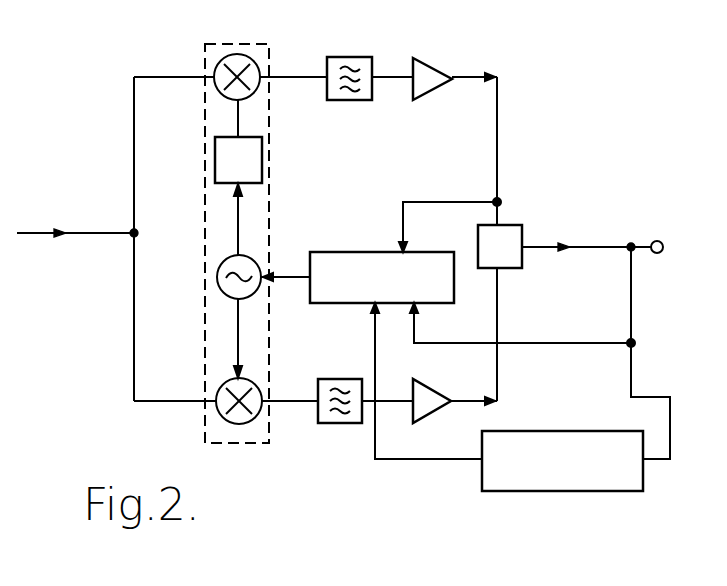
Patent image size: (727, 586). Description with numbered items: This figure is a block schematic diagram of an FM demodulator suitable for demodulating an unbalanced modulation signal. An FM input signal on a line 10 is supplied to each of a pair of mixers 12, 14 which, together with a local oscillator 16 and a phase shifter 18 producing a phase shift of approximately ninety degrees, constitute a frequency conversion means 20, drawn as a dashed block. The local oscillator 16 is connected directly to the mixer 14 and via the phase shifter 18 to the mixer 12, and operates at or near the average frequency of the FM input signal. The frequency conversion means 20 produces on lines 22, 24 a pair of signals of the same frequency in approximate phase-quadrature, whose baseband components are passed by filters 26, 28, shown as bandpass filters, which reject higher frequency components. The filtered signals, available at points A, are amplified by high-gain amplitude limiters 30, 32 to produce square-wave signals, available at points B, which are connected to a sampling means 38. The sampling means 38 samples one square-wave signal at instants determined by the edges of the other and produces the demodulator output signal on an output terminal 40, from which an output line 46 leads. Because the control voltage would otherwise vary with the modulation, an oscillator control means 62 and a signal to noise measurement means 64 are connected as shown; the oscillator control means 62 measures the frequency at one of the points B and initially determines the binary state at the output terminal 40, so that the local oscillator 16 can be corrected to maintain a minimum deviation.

The line 10 is at (97, 236).
The mixer 12 is at (218, 65).
The mixer 14 is at (220, 412).
The local oscillator 16 is at (254, 257).
The phase shifter 18 is at (262, 152).
The frequency conversion means 20 is at (270, 45).
The line 22 is at (298, 79).
The line 24 is at (298, 399).
The filter 26 is at (340, 57).
The filter 28 is at (333, 423).
The amplitude limiter 30 is at (433, 66).
The amplitude limiter 32 is at (421, 411).
The sampling means 38 is at (514, 229).
The output terminal 40 is at (645, 244).
The output line 46 is at (599, 244).
The oscillator control means 62 is at (355, 252).
The signal to noise measurement means 64 is at (573, 491).
The points A is at (391, 74).
The points B is at (500, 74).